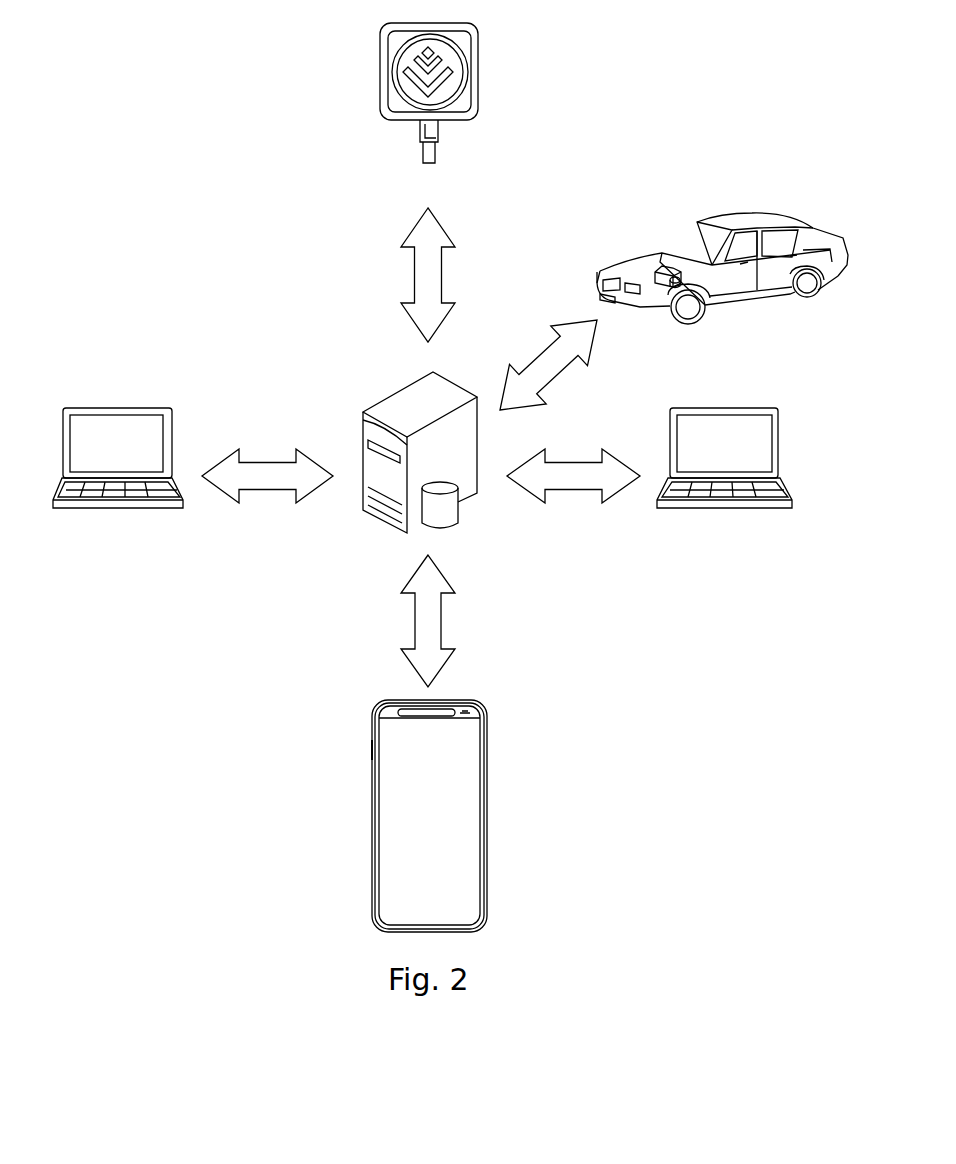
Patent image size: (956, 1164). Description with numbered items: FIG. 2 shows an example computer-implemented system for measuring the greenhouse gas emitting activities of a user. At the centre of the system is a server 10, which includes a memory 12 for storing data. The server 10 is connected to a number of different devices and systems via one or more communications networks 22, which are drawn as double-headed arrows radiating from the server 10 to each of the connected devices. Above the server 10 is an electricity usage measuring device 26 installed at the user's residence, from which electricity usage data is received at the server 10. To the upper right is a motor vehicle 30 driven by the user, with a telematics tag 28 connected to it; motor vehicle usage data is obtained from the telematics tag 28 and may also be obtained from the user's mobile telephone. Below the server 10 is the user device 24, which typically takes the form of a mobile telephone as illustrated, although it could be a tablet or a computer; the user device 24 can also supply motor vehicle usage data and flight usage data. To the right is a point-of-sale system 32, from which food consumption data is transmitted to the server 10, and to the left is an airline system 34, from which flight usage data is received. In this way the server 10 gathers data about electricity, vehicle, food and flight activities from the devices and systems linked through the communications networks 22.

The server 10 is at (397, 390).
The memory 12 is at (460, 513).
The communications network 22 is at (415, 277).
The user device 24 is at (370, 815).
The electricity usage measuring device 26 is at (478, 70).
The telematics tag 28 is at (658, 267).
The motor vehicle 30 is at (717, 217).
The point-of-sale system 32 is at (718, 503).
The airline system 34 is at (125, 503).